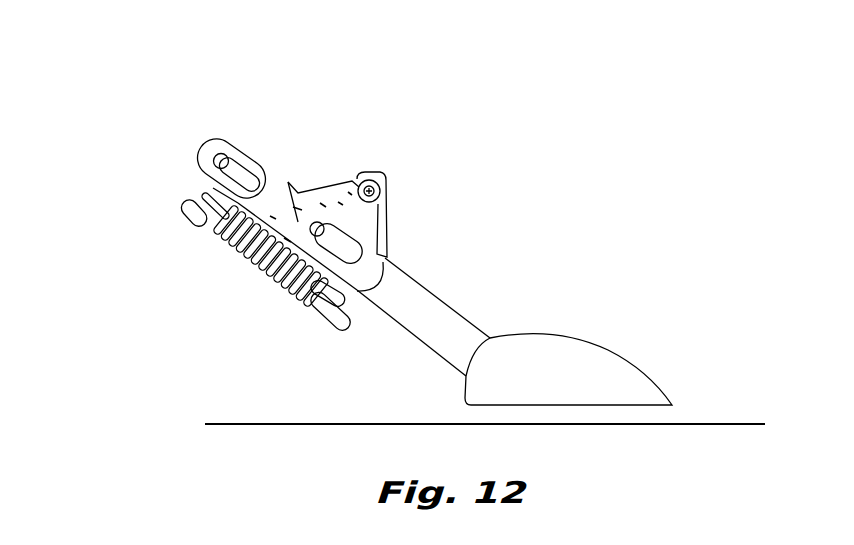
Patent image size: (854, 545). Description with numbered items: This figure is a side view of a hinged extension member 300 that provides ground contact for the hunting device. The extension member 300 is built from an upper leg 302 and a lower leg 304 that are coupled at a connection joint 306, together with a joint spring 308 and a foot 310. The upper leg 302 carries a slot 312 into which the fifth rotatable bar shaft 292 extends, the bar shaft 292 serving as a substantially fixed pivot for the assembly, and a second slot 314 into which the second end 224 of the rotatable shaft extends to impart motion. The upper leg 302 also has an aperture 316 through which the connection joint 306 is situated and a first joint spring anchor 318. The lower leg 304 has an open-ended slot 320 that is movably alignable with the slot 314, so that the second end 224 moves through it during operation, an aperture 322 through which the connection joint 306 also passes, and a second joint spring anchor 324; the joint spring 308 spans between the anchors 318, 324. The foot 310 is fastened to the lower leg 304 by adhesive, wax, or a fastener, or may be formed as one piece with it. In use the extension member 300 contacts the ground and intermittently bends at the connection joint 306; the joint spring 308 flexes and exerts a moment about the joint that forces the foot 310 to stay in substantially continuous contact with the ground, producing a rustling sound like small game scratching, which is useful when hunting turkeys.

The extension member 300 is at (450, 66).
The fifth rotatable bar shaft 292 is at (197, 150).
The slot 312 is at (246, 179).
The open-ended slot 320 is at (280, 180).
The upper leg 302 is at (287, 189).
The connection joint 306 is at (384, 174).
The aperture 316 is at (369, 176).
The aperture 322 is at (390, 200).
The second end 224 is at (380, 233).
The first joint spring anchor 318 is at (200, 218).
The joint spring 308 is at (250, 260).
The slot 314 is at (316, 293).
The second joint spring anchor 324 is at (340, 315).
The lower leg 304 is at (435, 313).
The foot 310 is at (609, 359).